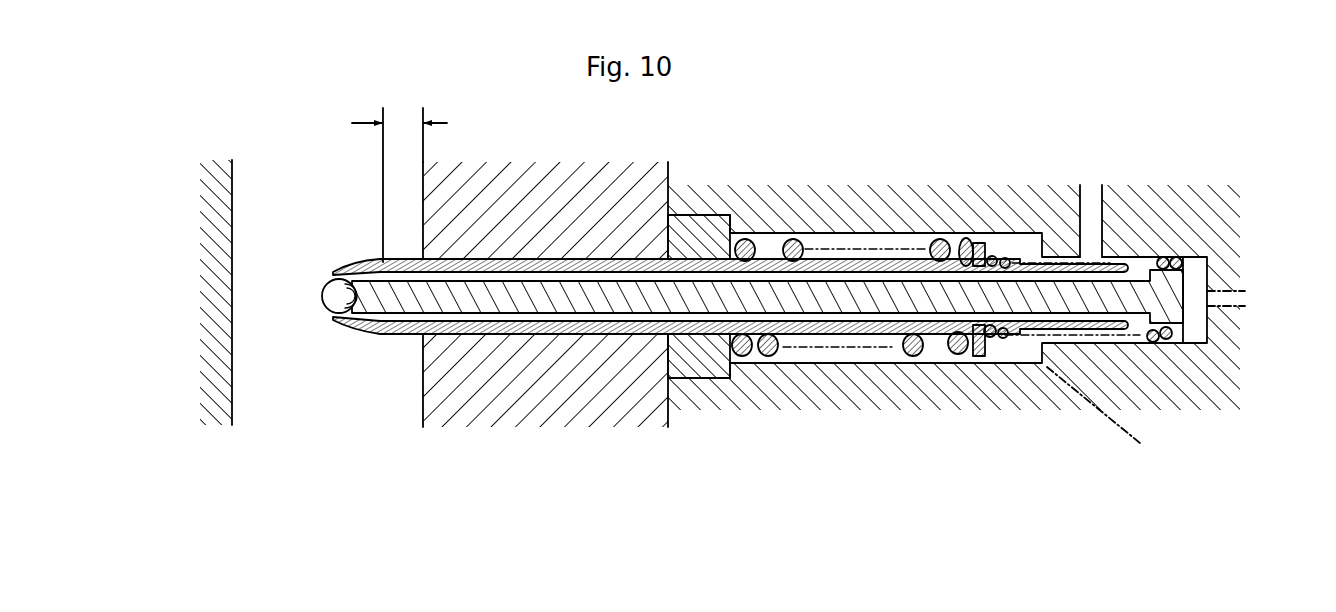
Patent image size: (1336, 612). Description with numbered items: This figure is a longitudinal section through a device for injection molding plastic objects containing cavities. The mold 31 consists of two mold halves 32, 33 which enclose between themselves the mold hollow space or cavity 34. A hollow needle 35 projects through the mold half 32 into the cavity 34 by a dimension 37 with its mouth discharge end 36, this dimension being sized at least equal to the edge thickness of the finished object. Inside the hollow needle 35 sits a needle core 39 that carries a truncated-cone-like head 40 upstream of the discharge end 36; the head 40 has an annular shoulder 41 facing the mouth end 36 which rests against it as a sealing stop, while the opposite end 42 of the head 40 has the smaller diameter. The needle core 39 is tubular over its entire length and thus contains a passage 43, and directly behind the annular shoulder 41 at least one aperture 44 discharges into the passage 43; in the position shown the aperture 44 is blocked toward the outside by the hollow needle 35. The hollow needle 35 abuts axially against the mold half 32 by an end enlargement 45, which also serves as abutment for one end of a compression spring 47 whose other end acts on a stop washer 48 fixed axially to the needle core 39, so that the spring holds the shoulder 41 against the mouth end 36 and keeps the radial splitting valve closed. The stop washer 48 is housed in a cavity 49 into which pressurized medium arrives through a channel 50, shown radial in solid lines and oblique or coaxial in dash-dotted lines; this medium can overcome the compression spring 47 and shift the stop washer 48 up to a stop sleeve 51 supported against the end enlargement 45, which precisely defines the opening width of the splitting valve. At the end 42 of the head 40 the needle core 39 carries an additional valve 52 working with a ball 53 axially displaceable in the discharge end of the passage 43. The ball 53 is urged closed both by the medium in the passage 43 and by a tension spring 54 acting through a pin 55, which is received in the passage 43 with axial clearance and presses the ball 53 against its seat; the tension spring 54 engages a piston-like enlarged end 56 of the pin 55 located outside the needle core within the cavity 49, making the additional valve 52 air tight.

The mold 31 is at (220, 400).
The mold half 32 is at (440, 208).
The mold half 33 is at (208, 211).
The cavity 34 is at (341, 193).
The hollow needle 35 is at (400, 340).
The mouth discharge end 36 is at (387, 340).
The dimension 37 is at (399, 185).
The needle core 39 is at (530, 268).
The head 40 is at (360, 328).
The annular shoulder 41 is at (370, 263).
The end of the head 42 is at (332, 273).
The passage 43 is at (523, 322).
The aperture 44 is at (383, 260).
The end enlargement 45 is at (700, 233).
The compression spring 47 is at (948, 240).
The stop washer 48 is at (980, 332).
The cavity 49 is at (1013, 250).
The channel 50 is at (1090, 210).
The stop sleeve 51 is at (858, 332).
The additional valve 52 is at (328, 317).
The ball 53 is at (327, 293).
The tension spring 54 is at (997, 332).
The pin 55 is at (615, 300).
The piston-like enlarged end 56 is at (1186, 288).